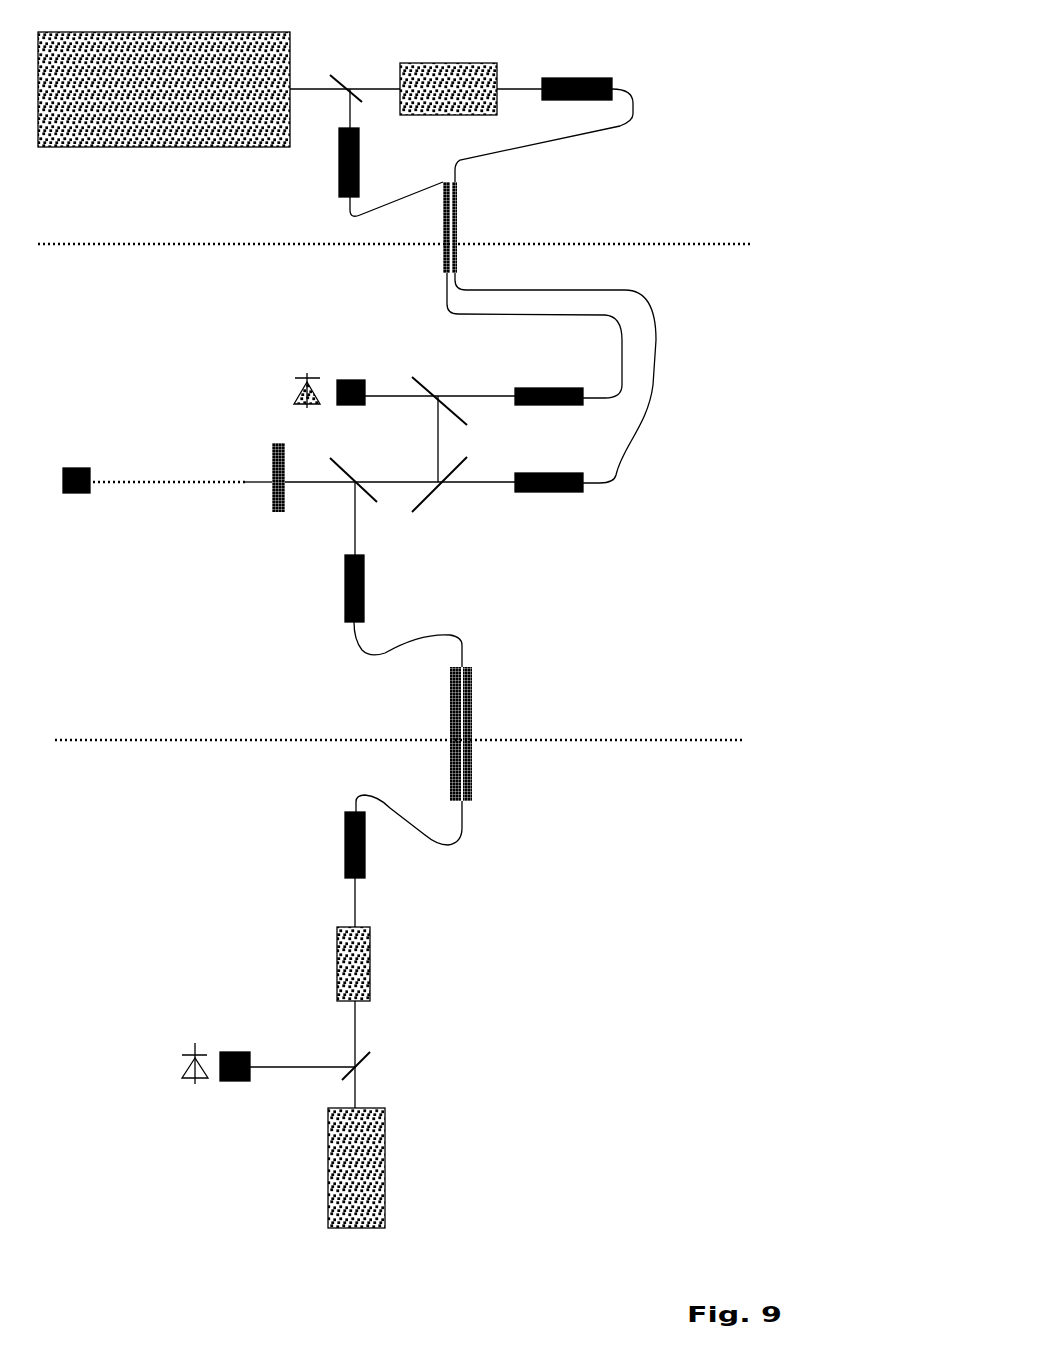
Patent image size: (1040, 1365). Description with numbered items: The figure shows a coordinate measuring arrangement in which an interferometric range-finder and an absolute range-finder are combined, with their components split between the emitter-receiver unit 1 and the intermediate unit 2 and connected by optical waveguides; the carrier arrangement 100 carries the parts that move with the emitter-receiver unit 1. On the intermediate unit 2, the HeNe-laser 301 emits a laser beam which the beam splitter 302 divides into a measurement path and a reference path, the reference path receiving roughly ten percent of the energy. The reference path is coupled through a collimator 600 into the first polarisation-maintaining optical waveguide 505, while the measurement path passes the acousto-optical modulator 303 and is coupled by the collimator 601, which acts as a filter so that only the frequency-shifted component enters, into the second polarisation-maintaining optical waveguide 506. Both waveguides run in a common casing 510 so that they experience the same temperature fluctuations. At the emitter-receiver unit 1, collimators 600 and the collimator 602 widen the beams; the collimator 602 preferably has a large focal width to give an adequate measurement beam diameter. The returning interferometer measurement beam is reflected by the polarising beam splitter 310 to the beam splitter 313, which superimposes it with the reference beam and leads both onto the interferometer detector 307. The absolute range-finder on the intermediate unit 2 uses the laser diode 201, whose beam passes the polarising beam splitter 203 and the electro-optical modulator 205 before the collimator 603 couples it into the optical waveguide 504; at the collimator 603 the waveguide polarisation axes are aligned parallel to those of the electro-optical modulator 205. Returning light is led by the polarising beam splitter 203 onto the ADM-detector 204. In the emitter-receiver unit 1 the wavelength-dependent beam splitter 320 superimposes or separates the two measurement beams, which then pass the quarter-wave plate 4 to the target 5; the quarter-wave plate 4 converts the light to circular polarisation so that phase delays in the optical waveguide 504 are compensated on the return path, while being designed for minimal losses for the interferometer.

The emitter-receiver unit 1 is at (58, 288).
The intermediate unit 2 is at (55, 225).
The quarter-wave plate 4 is at (278, 515).
The target 5 is at (63, 483).
The carrier arrangement 100 is at (205, 330).
The laser diode 201 is at (370, 1148).
The polarising beam splitter 203 is at (366, 1060).
The ADM-detector 204 is at (237, 1050).
The electro-optical modulator 205 is at (355, 958).
The HeNe-laser 301 is at (137, 148).
The beam splitter 302 is at (350, 84).
The acousto-optical modulator 303 is at (462, 68).
The interferometer detector 307 is at (345, 378).
The polarising beam splitter 310 is at (440, 500).
The beam splitter 313 is at (438, 378).
The wavelength-dependent beam splitter 320 is at (358, 470).
The optical waveguide 504 is at (463, 640).
The first polarisation-maintaining optical waveguide 505 is at (447, 305).
The second polarisation-maintaining optical waveguide 506 is at (653, 318).
The common guide or casing 510 is at (457, 203).
The collimator 600 is at (338, 192).
The collimator 601 is at (587, 80).
The collimator 602 is at (560, 494).
The collimator 603 is at (365, 850).